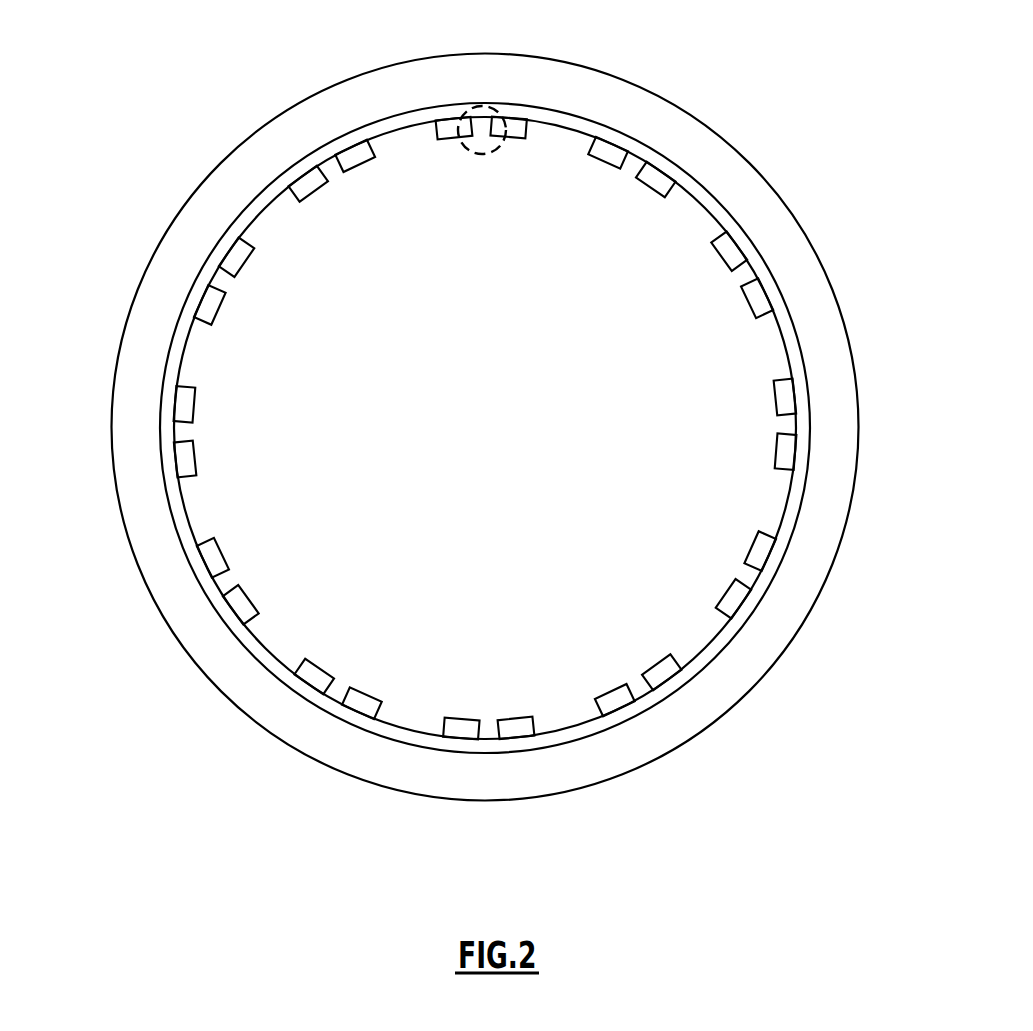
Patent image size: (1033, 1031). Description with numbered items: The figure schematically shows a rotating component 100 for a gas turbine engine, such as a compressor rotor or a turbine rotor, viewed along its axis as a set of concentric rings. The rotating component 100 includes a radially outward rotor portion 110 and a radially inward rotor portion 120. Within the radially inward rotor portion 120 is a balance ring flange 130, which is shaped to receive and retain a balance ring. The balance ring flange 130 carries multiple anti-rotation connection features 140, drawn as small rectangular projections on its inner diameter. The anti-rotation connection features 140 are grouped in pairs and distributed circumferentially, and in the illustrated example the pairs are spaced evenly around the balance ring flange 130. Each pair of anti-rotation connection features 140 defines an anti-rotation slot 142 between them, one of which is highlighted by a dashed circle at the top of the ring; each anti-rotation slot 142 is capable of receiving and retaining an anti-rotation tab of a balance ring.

The rotating component 100 is at (832, 205).
The radially outward rotor portion 110 is at (838, 403).
The radially inward rotor portion 120 is at (802, 387).
The balance ring flange 130 is at (788, 347).
The anti-rotation connection features 140 is at (445, 124).
The anti-rotation slot 142 is at (485, 107).